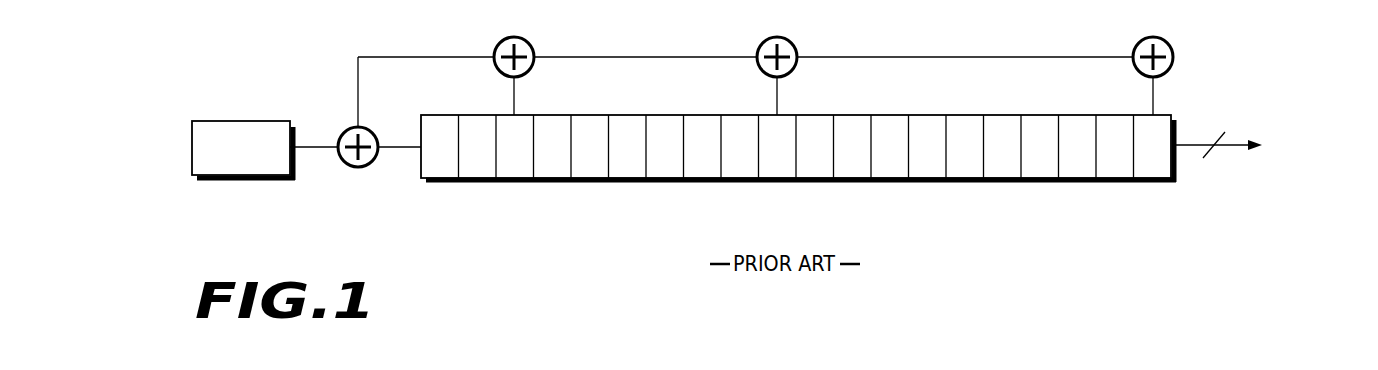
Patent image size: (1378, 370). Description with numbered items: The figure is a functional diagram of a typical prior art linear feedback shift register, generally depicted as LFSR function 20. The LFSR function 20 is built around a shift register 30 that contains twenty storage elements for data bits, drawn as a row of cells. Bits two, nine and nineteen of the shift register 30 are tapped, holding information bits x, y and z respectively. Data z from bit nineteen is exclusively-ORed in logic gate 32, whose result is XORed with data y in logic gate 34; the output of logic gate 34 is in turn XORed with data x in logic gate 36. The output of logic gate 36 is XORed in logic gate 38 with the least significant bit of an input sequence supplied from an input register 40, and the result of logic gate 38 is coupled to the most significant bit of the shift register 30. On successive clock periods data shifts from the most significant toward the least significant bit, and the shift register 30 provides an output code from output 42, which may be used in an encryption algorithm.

The linear feedback shift register function 20 is at (298, 249).
The shift register 30 is at (591, 115).
The logic gate 32 is at (1139, 71).
The logic gate 34 is at (791, 71).
The logic gate 36 is at (500, 71).
The logic gate 38 is at (357, 168).
The input register 40 is at (236, 121).
The output 42 is at (1227, 150).